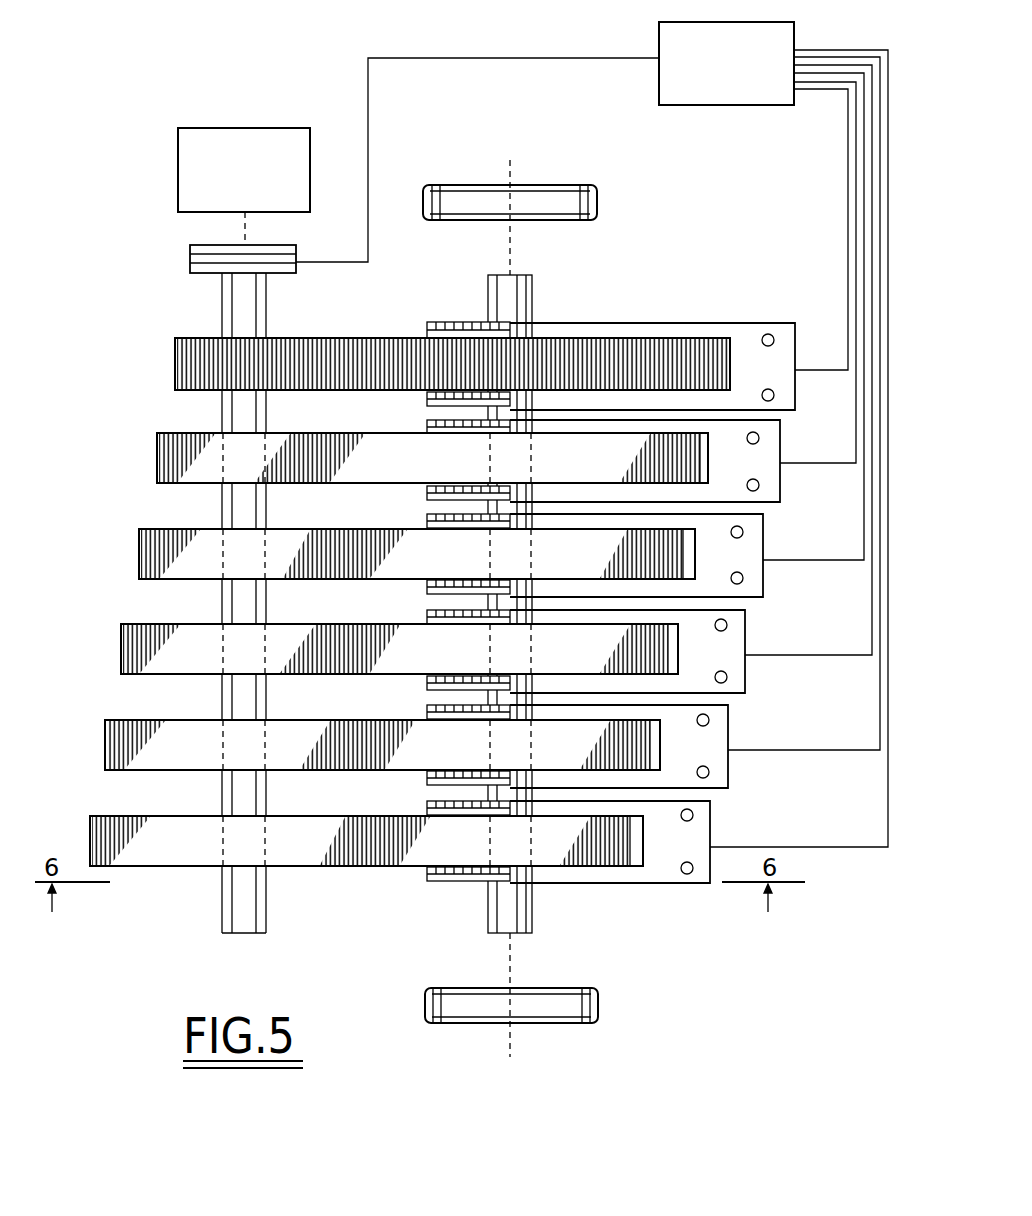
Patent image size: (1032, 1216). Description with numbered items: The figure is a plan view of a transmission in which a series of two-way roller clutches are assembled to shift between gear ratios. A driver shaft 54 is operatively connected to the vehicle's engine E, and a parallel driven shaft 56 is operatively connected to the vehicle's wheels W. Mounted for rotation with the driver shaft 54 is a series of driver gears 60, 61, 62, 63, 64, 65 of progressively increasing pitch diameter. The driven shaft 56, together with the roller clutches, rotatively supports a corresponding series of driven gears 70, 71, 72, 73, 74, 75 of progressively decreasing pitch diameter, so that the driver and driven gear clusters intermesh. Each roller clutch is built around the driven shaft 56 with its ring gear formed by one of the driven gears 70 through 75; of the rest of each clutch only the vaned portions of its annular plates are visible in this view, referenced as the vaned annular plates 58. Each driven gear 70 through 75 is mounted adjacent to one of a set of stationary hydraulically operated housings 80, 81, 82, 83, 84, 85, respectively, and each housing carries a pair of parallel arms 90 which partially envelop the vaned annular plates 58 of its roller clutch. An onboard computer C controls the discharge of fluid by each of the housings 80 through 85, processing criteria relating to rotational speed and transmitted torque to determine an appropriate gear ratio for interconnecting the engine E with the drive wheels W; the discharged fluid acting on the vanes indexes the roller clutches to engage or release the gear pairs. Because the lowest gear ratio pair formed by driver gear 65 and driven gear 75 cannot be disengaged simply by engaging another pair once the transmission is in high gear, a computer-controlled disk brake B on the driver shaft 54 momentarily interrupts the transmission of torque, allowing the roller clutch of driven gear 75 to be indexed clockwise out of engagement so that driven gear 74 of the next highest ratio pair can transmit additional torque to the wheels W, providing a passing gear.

The driver shaft 54 is at (242, 304).
The driven shaft 56 is at (512, 302).
The vaned annular plates 58 is at (452, 322).
The driver gear 60 is at (428, 381).
The driver gear 61 is at (407, 458).
The driver gear 62 is at (390, 554).
The driver gear 63 is at (372, 649).
The driver gear 64 is at (355, 745).
The driver gear 65 is at (339, 841).
The driven gear 70 is at (425, 382).
The driven gear 71 is at (476, 473).
The driven gear 72 is at (476, 568).
The driven gear 73 is at (476, 663).
The driven gear 74 is at (476, 759).
The driven gear 75 is at (476, 855).
The stationary hydraulically operated housing 80 is at (778, 386).
The stationary hydraulically operated housing 81 is at (758, 474).
The stationary hydraulically operated housing 82 is at (740, 567).
The stationary hydraulically operated housing 83 is at (718, 664).
The stationary hydraulically operated housing 84 is at (703, 759).
The stationary hydraulically operated housing 85 is at (685, 854).
The parallel arms 90 is at (615, 323).
The disk brake B is at (192, 273).
The engine E is at (244, 186).
The onboard computer C is at (545, 142).
The wheels W is at (543, 187).